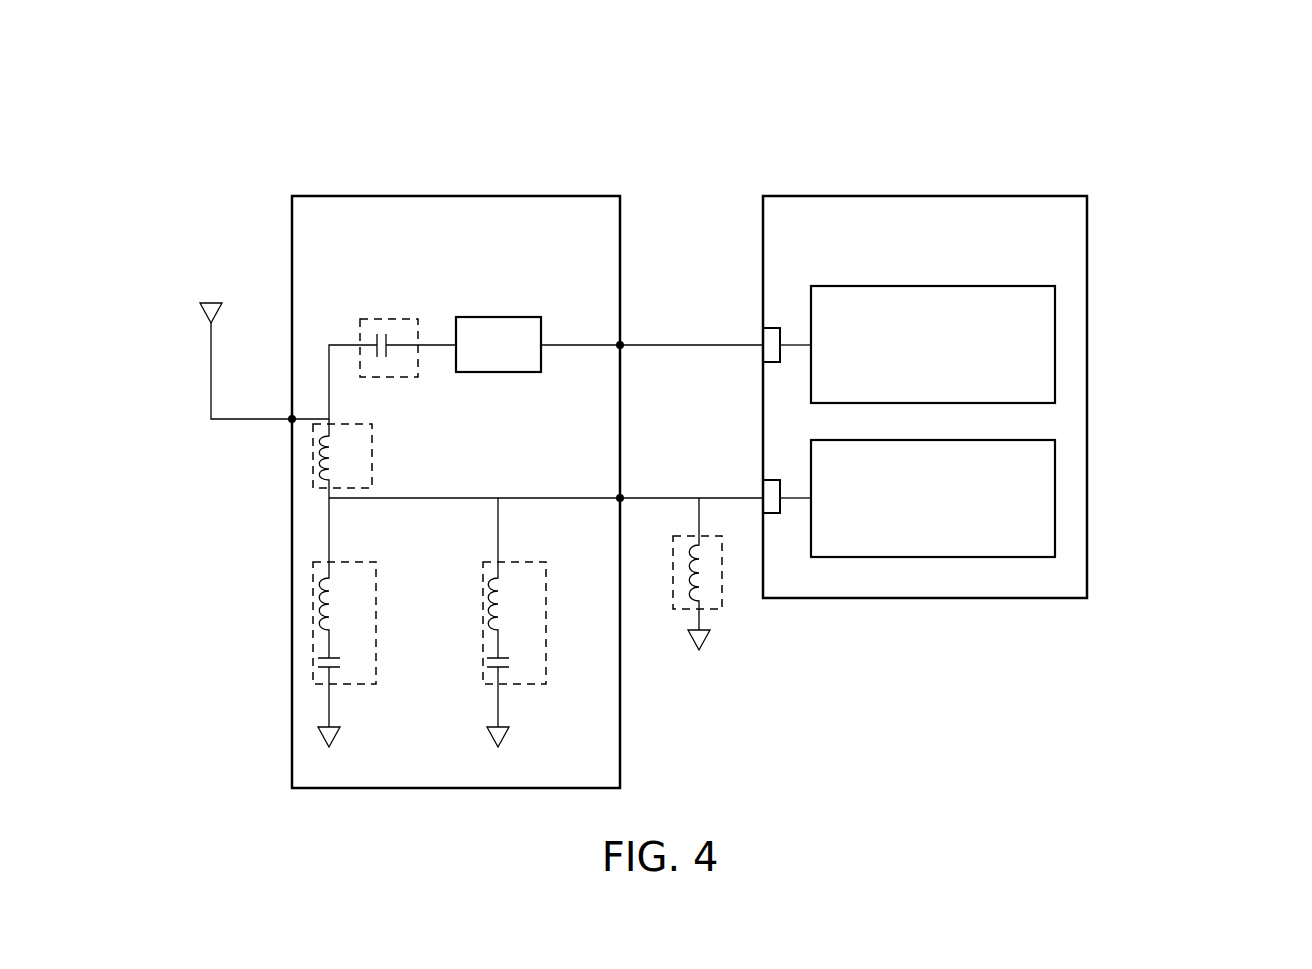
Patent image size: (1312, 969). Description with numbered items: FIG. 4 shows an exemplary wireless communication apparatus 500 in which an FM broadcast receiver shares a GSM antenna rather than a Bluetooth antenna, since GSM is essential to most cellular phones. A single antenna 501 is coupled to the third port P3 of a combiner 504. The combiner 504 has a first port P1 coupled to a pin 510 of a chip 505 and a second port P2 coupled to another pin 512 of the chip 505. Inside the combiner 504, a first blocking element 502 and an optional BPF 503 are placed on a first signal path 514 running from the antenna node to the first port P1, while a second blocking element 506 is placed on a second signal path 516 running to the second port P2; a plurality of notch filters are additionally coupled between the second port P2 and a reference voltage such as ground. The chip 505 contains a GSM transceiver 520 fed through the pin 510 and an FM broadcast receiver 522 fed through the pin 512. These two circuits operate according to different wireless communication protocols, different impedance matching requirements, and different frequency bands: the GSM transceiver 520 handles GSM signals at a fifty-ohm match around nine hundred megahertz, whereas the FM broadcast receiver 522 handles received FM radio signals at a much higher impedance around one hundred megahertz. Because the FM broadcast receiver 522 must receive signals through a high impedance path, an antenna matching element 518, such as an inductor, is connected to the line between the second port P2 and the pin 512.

The communication system 500 is at (1168, 136).
The antenna 501 is at (201, 316).
The first blocking element 502 is at (400, 319).
The BPF 503 is at (510, 317).
The combiner 504 is at (467, 196).
The chip 505 is at (990, 196).
The second blocking element 506 is at (373, 442).
The pin 510 is at (766, 328).
The pin 512 is at (766, 481).
The first signal path 514 is at (572, 348).
The second signal path 516 is at (575, 496).
The antenna matching element 518 is at (722, 607).
The GSM transceiver 520 is at (1056, 339).
The FM broadcast receiver 522 is at (1057, 494).
The first port P1 is at (623, 343).
The second port P2 is at (623, 497).
The third port P3 is at (284, 426).